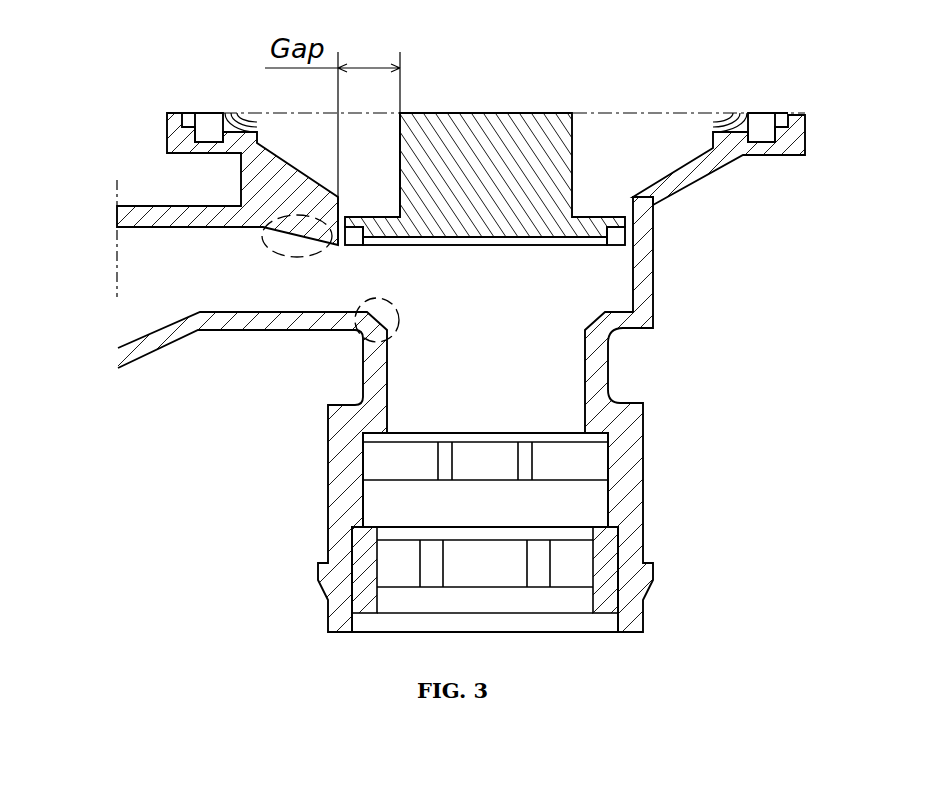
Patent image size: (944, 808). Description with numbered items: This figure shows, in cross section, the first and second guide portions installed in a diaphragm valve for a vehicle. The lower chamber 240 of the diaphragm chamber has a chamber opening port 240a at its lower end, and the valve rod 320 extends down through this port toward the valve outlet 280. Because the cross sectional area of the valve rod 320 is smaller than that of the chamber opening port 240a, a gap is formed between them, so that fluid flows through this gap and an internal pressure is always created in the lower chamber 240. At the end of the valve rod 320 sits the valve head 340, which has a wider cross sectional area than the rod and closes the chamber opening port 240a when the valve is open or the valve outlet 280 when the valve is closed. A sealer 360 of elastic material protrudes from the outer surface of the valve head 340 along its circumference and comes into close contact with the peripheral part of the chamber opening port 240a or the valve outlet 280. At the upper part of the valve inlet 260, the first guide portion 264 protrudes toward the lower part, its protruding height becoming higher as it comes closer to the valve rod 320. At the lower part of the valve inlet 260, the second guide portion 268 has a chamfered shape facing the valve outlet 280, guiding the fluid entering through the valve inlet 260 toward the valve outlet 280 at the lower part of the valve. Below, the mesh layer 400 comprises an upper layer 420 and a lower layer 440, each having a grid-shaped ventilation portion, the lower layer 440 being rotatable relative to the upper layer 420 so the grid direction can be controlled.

The lower chamber 240 is at (700, 170).
The chamber opening port 240a is at (368, 207).
The valve inlet 260 is at (365, 280).
The first guide portion 264 is at (277, 250).
The second guide portion 268 is at (393, 307).
The valve outlet 280 is at (540, 324).
The valve rod 320 is at (488, 160).
The valve head 340 is at (607, 220).
The sealer 360 is at (620, 240).
The mesh layer 400 is at (770, 485).
The upper layer 420 is at (583, 468).
The lower layer 440 is at (568, 567).